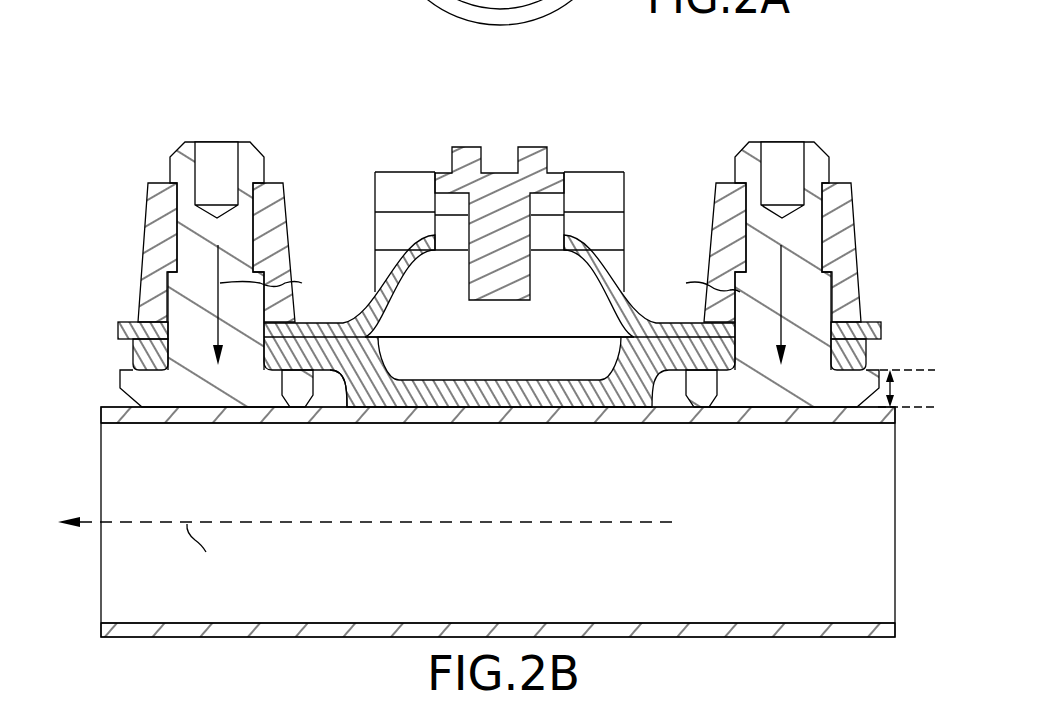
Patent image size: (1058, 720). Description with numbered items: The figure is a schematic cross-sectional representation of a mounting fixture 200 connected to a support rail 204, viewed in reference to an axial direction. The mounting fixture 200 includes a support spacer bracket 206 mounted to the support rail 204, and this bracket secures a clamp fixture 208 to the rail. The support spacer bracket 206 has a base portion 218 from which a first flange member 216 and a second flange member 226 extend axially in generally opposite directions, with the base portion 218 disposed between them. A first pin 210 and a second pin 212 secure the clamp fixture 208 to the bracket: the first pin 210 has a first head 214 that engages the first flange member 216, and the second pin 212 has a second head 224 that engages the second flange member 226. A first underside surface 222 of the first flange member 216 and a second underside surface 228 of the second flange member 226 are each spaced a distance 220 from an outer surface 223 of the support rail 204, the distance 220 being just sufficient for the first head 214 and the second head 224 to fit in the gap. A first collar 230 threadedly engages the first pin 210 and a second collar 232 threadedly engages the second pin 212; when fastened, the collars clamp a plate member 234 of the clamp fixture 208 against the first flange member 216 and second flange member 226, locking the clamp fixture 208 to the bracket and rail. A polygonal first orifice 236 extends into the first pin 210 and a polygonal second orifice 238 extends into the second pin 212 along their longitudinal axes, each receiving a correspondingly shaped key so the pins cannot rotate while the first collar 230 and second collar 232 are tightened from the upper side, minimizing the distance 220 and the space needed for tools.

The mounting fixture 200 is at (172, 75).
The support rail 204 is at (893, 530).
The support spacer bracket 206 is at (624, 410).
The clamp fixture 208 is at (676, 188).
The first pin 210 is at (216, 246).
The second pin 212 is at (789, 240).
The first head 214 is at (130, 387).
The first flange member 216 is at (132, 352).
The base portion 218 is at (437, 400).
The distance 220 is at (893, 388).
The first underside surface 222 is at (290, 407).
The outer surface 223 is at (336, 412).
The second head 224 is at (853, 387).
The second flange member 226 is at (870, 345).
The second underside surface 228 is at (710, 405).
The first collar 230 is at (148, 250).
The second collar 232 is at (845, 222).
The plate member 234 is at (115, 322).
The first orifice 236 is at (218, 157).
The second orifice 238 is at (778, 142).